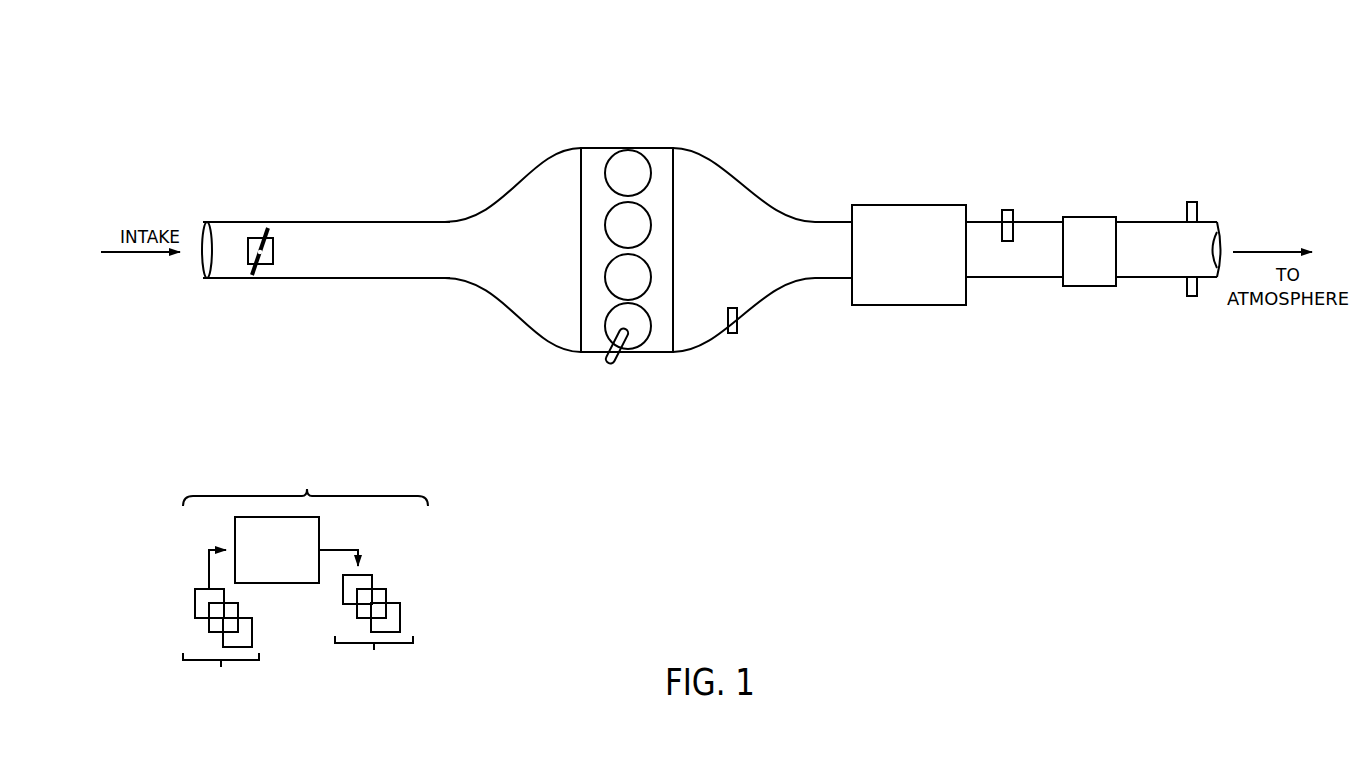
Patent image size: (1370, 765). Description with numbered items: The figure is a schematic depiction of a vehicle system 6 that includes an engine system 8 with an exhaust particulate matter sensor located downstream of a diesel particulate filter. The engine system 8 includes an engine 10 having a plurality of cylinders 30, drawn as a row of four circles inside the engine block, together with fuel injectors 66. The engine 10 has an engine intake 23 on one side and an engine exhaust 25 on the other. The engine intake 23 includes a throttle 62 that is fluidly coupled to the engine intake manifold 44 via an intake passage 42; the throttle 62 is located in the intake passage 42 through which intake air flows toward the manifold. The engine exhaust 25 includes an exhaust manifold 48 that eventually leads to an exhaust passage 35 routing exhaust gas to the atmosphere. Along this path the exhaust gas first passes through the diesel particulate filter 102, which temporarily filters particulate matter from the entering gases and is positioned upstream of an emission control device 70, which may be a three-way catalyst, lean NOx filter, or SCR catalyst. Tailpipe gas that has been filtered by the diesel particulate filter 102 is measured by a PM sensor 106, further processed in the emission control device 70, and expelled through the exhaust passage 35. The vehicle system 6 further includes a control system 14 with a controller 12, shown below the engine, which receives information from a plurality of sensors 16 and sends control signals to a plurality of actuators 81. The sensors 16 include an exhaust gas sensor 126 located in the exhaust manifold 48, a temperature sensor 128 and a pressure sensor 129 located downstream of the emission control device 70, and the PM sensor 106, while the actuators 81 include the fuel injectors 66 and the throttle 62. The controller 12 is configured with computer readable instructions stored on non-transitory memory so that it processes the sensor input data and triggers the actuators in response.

The vehicle system 6 is at (156, 88).
The engine system 8 is at (665, 124).
The engine 10 is at (673, 233).
The controller 12 is at (277, 550).
The control system 14 is at (305, 580).
The sensors 16 is at (221, 630).
The engine intake 23 is at (378, 208).
The engine exhaust 25 is at (776, 196).
The cylinders 30 is at (648, 167).
The exhaust passage 35 is at (1153, 220).
The intake passage 42 is at (306, 280).
The engine intake manifold 44 is at (513, 250).
The exhaust manifold 48 is at (744, 250).
The throttle 62 is at (277, 255).
The fuel injectors 66 is at (616, 358).
The emission control device 70 is at (1089, 251).
The actuators 81 is at (367, 621).
The diesel particulate filter 102 is at (909, 255).
The PM sensor 106 is at (1003, 212).
The exhaust gas sensor 126 is at (737, 312).
The temperature sensor 128 is at (1187, 287).
The pressure sensor 129 is at (1187, 212).